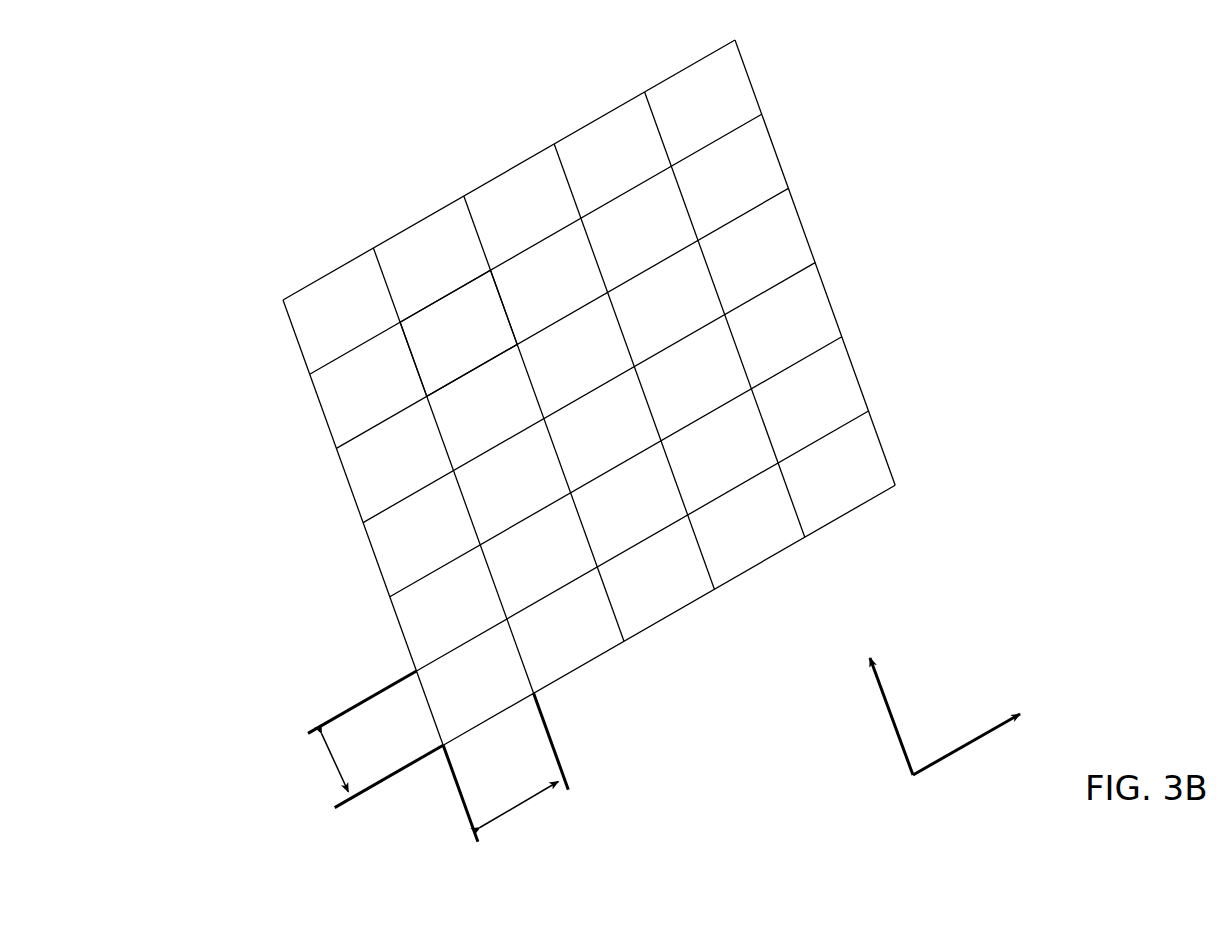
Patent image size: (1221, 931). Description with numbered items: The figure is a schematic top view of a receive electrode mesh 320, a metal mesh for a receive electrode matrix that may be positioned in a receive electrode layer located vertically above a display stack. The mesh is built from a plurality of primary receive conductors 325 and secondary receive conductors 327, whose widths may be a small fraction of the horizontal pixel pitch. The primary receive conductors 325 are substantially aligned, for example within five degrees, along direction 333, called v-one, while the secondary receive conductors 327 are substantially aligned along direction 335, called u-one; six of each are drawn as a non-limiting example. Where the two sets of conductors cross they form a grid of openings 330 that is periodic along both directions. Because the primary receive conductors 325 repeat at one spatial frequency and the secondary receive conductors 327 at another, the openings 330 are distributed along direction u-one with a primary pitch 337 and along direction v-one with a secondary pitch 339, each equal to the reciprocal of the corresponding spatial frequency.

The receive electrode mesh 320 is at (270, 138).
The primary receive conductors 325 is at (300, 347).
The secondary receive conductors 327 is at (363, 254).
The openings 330 is at (458, 343).
The direction v1 333 is at (877, 682).
The direction u1 335 is at (993, 725).
The primary pitch 337 is at (570, 752).
The secondary pitch 339 is at (367, 685).